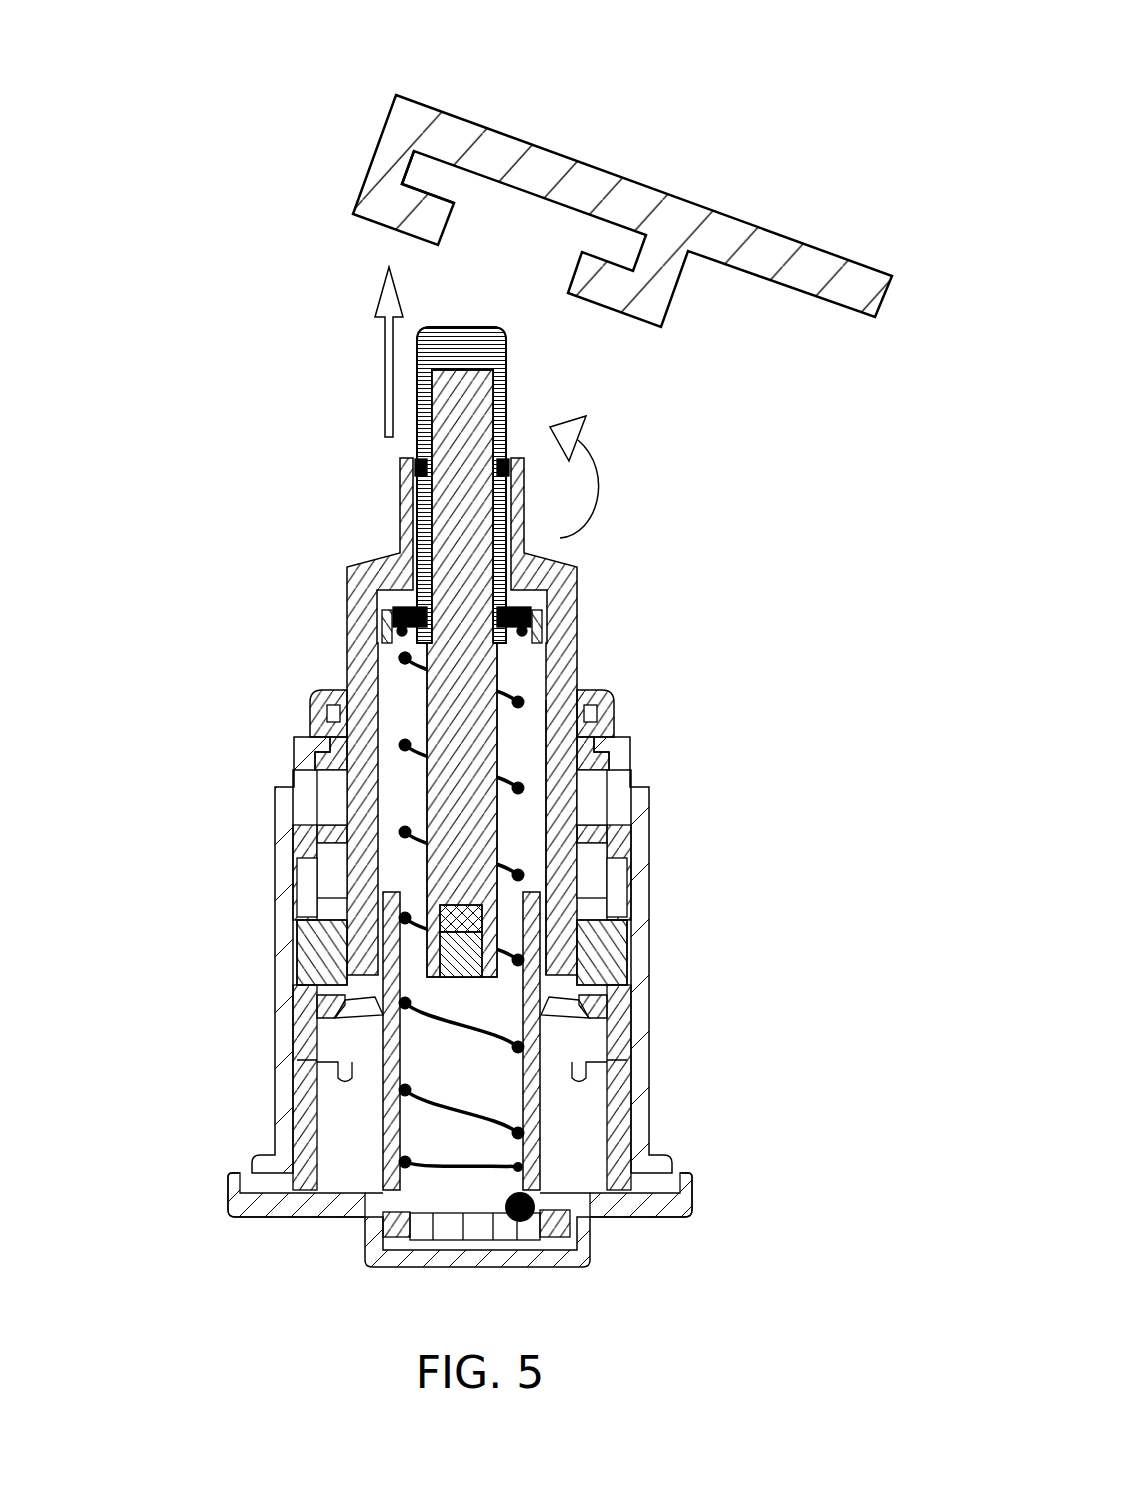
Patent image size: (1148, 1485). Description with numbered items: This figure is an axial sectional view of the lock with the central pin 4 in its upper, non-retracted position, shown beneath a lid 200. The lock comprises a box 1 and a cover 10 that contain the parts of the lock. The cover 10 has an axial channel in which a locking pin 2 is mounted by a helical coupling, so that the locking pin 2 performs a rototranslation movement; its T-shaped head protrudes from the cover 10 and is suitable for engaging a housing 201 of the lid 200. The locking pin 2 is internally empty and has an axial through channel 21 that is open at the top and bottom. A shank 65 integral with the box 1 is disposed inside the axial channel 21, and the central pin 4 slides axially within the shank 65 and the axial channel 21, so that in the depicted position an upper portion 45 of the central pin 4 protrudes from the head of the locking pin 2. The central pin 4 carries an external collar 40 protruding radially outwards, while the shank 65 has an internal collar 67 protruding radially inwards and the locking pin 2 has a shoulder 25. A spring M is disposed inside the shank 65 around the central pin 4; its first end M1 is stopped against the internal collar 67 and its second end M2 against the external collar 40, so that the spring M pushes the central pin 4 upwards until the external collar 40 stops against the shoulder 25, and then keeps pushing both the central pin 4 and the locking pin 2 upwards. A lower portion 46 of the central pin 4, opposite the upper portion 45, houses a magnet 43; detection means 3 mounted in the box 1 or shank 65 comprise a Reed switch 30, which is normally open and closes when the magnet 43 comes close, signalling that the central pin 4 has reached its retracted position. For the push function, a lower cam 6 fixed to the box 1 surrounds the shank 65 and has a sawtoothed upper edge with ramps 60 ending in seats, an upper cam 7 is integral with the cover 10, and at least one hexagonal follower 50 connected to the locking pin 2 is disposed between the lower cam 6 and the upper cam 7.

The box 1 is at (640, 1216).
The locking pin 2 is at (368, 464).
The detection means 3 is at (520, 1232).
The central pin 4 is at (536, 765).
The lower cam 6 is at (302, 1115).
The upper cam 7 is at (616, 1001).
The cover 10 is at (278, 931).
The axial through channel 21 is at (543, 822).
The shoulder 25 is at (397, 600).
The Reed switch 30 is at (535, 1210).
The external collar 40 is at (528, 731).
The magnet 43 is at (463, 957).
The upper portion 45 is at (462, 325).
The lower portion 46 is at (453, 977).
The follower 50 is at (608, 955).
The ramp 60 is at (595, 1060).
The shank 65 is at (532, 1112).
The internal collar 67 is at (403, 1250).
The lid 200 is at (782, 250).
The housing 201 is at (450, 186).
The spring M is at (526, 790).
The first end M1 is at (360, 1157).
The second end M2 is at (400, 658).